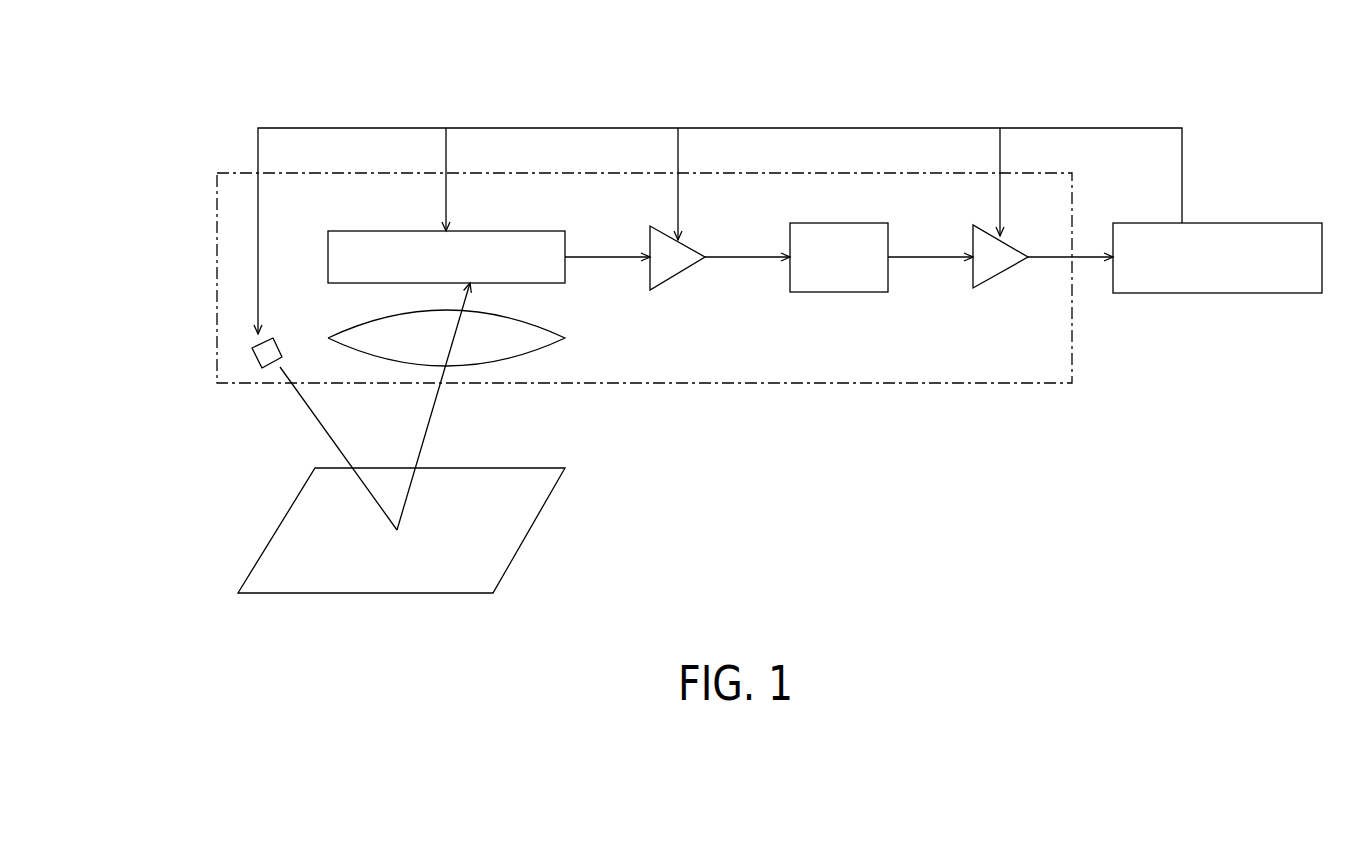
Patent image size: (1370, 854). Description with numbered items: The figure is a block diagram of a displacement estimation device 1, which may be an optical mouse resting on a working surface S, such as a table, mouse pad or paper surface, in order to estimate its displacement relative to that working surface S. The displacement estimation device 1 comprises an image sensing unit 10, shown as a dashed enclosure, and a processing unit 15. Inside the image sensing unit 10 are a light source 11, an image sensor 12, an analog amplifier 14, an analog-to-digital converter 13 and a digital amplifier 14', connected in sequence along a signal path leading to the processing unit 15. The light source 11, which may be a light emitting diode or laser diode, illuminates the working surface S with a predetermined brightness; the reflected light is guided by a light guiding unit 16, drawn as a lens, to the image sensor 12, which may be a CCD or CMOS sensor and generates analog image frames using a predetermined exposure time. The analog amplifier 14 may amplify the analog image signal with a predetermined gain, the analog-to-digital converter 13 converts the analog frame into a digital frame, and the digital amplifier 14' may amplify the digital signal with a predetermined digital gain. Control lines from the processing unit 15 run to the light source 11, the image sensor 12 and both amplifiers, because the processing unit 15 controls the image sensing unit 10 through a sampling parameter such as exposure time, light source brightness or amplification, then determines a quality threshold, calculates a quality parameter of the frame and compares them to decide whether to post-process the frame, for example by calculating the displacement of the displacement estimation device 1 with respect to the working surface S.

The displacement estimation device 1 is at (1252, 95).
The image sensing unit 10 is at (525, 173).
The light source 11 is at (252, 352).
The image sensor 12 is at (365, 231).
The analog-to-digital converter 13 is at (838, 292).
The analog amplifier 14 is at (677, 300).
The digital amplifier 14' is at (1000, 299).
The processing unit 15 is at (1183, 293).
The light guiding unit 16 is at (537, 348).
The working surface S is at (283, 513).